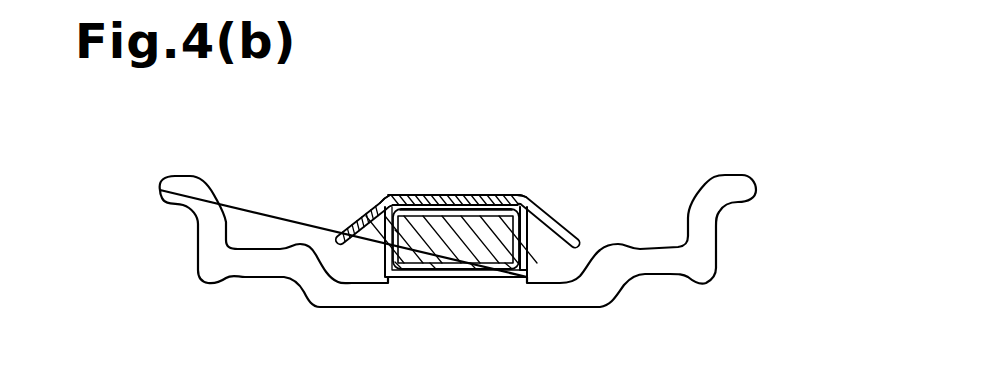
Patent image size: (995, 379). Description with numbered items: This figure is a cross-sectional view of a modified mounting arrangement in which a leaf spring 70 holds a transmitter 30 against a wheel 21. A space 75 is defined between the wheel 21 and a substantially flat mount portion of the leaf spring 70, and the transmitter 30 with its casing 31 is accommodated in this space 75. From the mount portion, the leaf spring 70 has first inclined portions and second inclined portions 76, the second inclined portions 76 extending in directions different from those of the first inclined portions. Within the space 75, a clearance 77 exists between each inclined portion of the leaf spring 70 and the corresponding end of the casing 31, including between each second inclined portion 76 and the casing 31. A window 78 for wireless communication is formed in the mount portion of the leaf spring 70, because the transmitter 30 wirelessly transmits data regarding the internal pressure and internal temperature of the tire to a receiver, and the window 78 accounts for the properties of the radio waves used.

The wheel 21 is at (660, 268).
The leaf spring 70 is at (459, 279).
The space 75 is at (562, 268).
The transmitter 30 is at (453, 207).
The casing 31 is at (490, 207).
The window 78 is at (412, 197).
The second inclined portion 76 is at (347, 227).
The clearance 77 is at (376, 202).